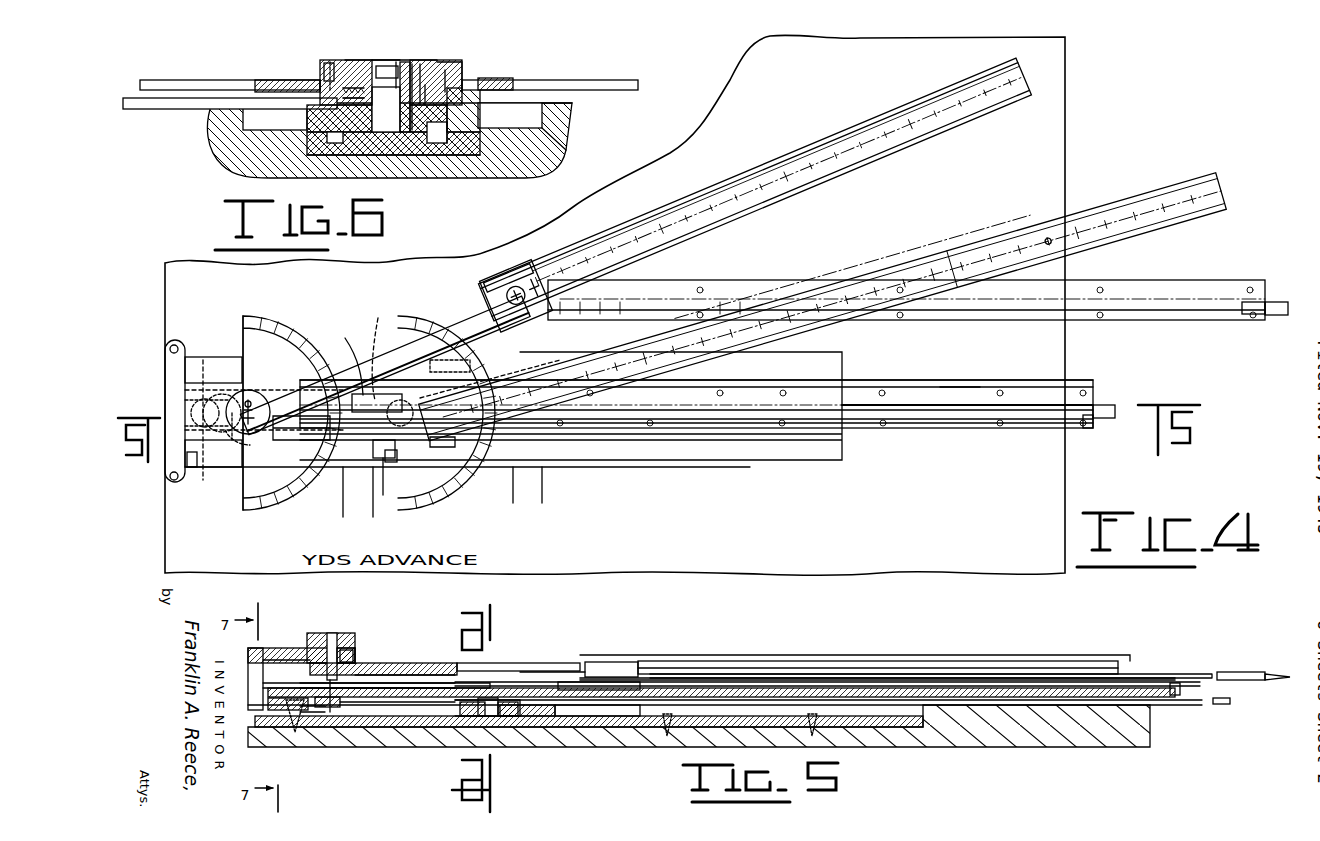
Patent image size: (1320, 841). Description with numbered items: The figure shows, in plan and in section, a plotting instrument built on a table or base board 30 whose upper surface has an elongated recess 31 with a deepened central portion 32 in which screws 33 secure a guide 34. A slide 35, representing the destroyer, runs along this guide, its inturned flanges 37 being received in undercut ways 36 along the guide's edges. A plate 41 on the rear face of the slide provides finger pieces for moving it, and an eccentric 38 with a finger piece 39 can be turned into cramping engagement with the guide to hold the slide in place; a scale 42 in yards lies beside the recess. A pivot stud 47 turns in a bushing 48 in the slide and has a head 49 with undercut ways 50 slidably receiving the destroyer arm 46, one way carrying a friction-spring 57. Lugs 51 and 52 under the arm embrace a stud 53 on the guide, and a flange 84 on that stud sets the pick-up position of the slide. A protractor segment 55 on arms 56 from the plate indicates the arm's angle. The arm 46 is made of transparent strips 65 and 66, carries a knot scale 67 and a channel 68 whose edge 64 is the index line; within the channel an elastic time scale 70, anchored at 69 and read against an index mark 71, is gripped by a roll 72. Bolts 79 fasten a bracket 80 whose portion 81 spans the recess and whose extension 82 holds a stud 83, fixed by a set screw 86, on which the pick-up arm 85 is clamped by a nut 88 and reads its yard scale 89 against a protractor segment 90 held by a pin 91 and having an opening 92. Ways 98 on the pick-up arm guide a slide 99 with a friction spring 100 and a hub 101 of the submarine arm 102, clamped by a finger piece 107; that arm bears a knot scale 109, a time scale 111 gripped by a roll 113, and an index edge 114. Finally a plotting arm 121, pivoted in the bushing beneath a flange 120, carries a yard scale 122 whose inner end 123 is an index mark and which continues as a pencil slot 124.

In FIG. 6, the table or base board 30 is at (228, 160).
In FIG. 4, the table or base board 30 is at (945, 573).
In FIG. 5, the table or base board 30 is at (1050, 742).
In FIG. 6, the elongated recess 31 is at (560, 118).
In FIG. 4, the elongated recess 31 is at (842, 460).
In FIG. 5, the elongated recess 31 is at (255, 708).
In FIG. 6, the deepened central or axial portion 32 is at (385, 158).
In FIG. 5, the deepened central or axial portion 32 is at (255, 724).
In FIG. 5, the screws 33 is at (662, 730).
In FIG. 6, the guide 34 is at (472, 152).
In FIG. 4, the guide 34 is at (843, 438).
In FIG. 5, the guide 34 is at (895, 722).
In FIG. 6, the slide 35 is at (472, 118).
In FIG. 4, the slide 35 is at (533, 467).
In FIG. 5, the slide 35 is at (551, 716).
In FIG. 6, the undercut ways 36 is at (433, 143).
In FIG. 6, the inturned flanges 37 is at (455, 143).
In FIG. 4, the eccentric 38 is at (347, 358).
In FIG. 4, the finger piece 39 is at (376, 472).
In FIG. 5, the finger piece 39 is at (465, 707).
In FIG. 4, the plate or strip 41 is at (384, 495).
In FIG. 5, the plate or strip 41 is at (468, 716).
In FIG. 4, the scale 42 is at (300, 520).
In FIG. 6, the destroyer arm 46 is at (358, 59).
In FIG. 4, the destroyer arm 46 is at (958, 385).
In FIG. 5, the destroyer arm 46 is at (552, 670).
In FIG. 6, the pivot stud 47 is at (386, 132).
In FIG. 4, the pivot stud 47 is at (407, 409).
In FIG. 5, the pivot stud 47 is at (488, 716).
In FIG. 6, the bushing 48 is at (340, 143).
In FIG. 5, the bushing 48 is at (508, 716).
In FIG. 6, the head 49 is at (452, 80).
In FIG. 4, the head 49 is at (442, 442).
In FIG. 5, the head 49 is at (462, 686).
In FIG. 6, the undercut ways 50 is at (448, 66).
In FIG. 4, the lug 51 is at (190, 411).
In FIG. 5, the lug 51 is at (268, 702).
In FIG. 4, the lug 52 is at (224, 394).
In FIG. 5, the lug 52 is at (322, 708).
In FIG. 4, the stud 53 is at (192, 468).
In FIG. 5, the stud 53 is at (290, 720).
In FIG. 6, the graduated protractor segment 55 is at (608, 80).
In FIG. 4, the graduated protractor segment 55 is at (456, 494).
In FIG. 5, the graduated protractor segment 55 is at (572, 672).
In FIG. 6, the arms 56 is at (497, 84).
In FIG. 4, the arms 56 is at (412, 480).
In FIG. 6, the friction-spring 57 is at (330, 60).
In FIG. 4, the friction-spring 57 is at (380, 348).
In FIG. 6, the edge of the channel 64 is at (391, 97).
In FIG. 4, the edge of the channel 64 is at (867, 403).
In FIG. 6, the upper strip 65 is at (388, 66).
In FIG. 5, the upper strip 65 is at (560, 682).
In FIG. 6, the lower strip 66 is at (323, 72).
In FIG. 5, the lower strip 66 is at (375, 705).
In FIG. 4, the speed scale 67 is at (664, 388).
In FIG. 6, the longitudinal channel 68 is at (398, 61).
In FIG. 4, the anchorage 69 is at (232, 440).
In FIG. 5, the anchorage 69 is at (333, 712).
In FIG. 6, the time scale 70 is at (413, 76).
In FIG. 4, the time scale 70 is at (1104, 419).
In FIG. 5, the time scale 70 is at (1182, 688).
In FIG. 4, the index mark 71 is at (377, 402).
In FIG. 4, the roll 72 is at (1089, 428).
In FIG. 5, the roll 72 is at (1174, 696).
In FIG. 4, the bolts 79 is at (171, 479).
In FIG. 4, the bracket 80 is at (166, 360).
In FIG. 5, the bracket 80 is at (248, 672).
In FIG. 4, the portion of bracket 81 is at (166, 382).
In FIG. 5, the portion of bracket 81 is at (310, 681).
In FIG. 4, the extension 82 is at (218, 490).
In FIG. 5, the extension 82 is at (285, 648).
In FIG. 4, the stud 83 is at (251, 405).
In FIG. 5, the stud 83 is at (330, 632).
In FIG. 4, the flange or washer 84 is at (203, 357).
In FIG. 5, the flange or washer 84 is at (305, 715).
In FIG. 4, the pick-up arm 85 is at (440, 307).
In FIG. 5, the pick-up arm 85 is at (890, 662).
In FIG. 5, the set screw 86 is at (355, 660).
In FIG. 4, the nut 88 is at (254, 438).
In FIG. 5, the nut 88 is at (352, 633).
In FIG. 4, the scale 89 is at (606, 243).
In FIG. 4, the graduated protractor segment 90 is at (266, 334).
In FIG. 5, the graduated protractor segment 90 is at (460, 663).
In FIG. 5, the pin 91 is at (374, 674).
In FIG. 4, the opening 92 is at (300, 442).
In FIG. 5, the opening 92 is at (400, 663).
In FIG. 4, the longitudinal ways 98 is at (770, 212).
In FIG. 5, the longitudinal ways 98 is at (672, 661).
In FIG. 4, the slide 99 is at (486, 280).
In FIG. 5, the slide 99 is at (620, 661).
In FIG. 4, the friction spring 100 is at (512, 275).
In FIG. 4, the hub 101 is at (488, 287).
In FIG. 4, the submarine arm 102 is at (746, 283).
In FIG. 5, the submarine arm 102 is at (1140, 672).
In FIG. 4, the finger piece 107 is at (531, 264).
In FIG. 4, the speed scale 109 is at (654, 290).
In FIG. 4, the time scale 111 is at (1270, 317).
In FIG. 5, the time scale 111 is at (1262, 674).
In FIG. 4, the gripping roll 113 is at (1254, 315).
In FIG. 5, the gripping roll 113 is at (1262, 681).
In FIG. 4, the edge of the channel 114 is at (707, 300).
In FIG. 6, the flange 120 is at (425, 95).
In FIG. 6, the plotting arm 121 is at (340, 98).
In FIG. 4, the plotting arm 121 is at (949, 238).
In FIG. 5, the plotting arm 121 is at (1202, 708).
In FIG. 4, the scale 122 is at (1043, 242).
In FIG. 4, the inner end of center line 123 is at (512, 395).
In FIG. 4, the narrow slot 124 is at (906, 273).